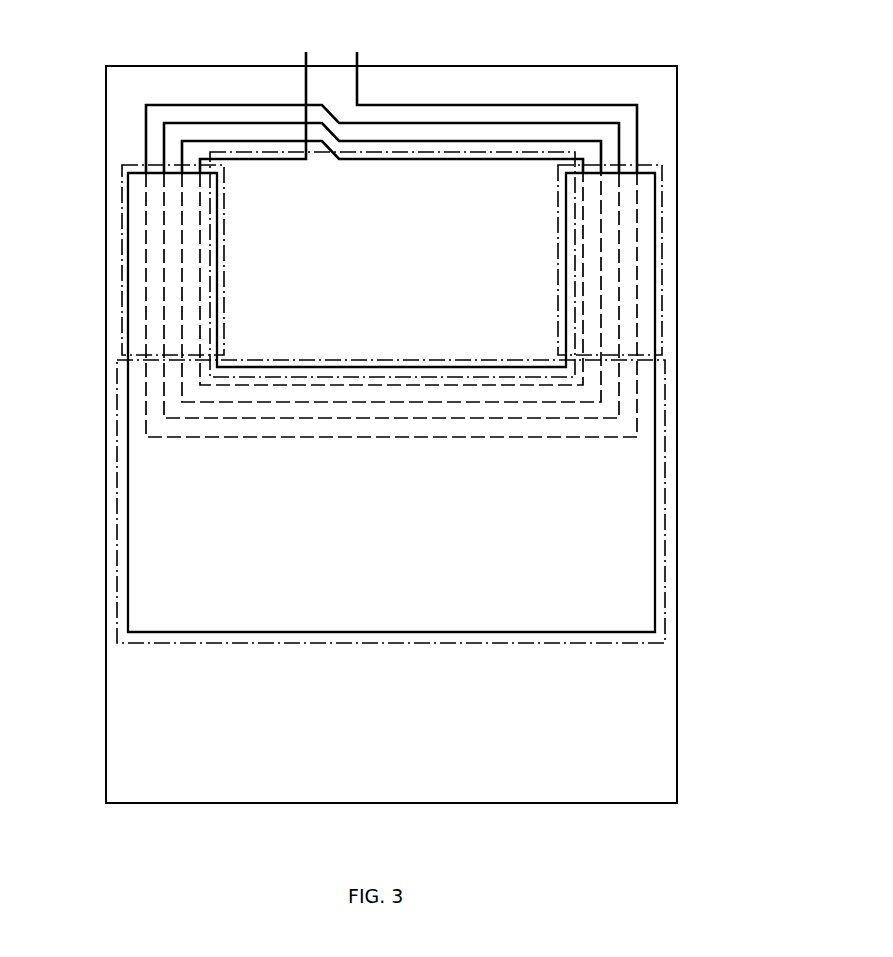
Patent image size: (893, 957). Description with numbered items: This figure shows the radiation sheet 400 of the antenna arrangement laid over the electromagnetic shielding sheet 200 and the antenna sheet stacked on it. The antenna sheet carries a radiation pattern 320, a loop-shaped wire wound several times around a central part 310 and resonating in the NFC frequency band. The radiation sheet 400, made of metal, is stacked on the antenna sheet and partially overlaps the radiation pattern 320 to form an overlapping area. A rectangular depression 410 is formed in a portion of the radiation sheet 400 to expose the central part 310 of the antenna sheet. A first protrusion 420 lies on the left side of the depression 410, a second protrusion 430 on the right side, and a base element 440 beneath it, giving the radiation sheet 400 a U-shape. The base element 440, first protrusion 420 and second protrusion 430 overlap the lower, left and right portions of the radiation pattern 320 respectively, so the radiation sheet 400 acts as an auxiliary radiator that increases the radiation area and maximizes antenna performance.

The electromagnetic shielding sheet 200 is at (106, 333).
The central part 310 is at (249, 182).
The radiation pattern 320 is at (508, 104).
The radiation sheet 400 is at (655, 428).
The depression 410 is at (415, 152).
The first protrusion 420 is at (121, 262).
The second protrusion 430 is at (662, 260).
The base element 440 is at (666, 500).